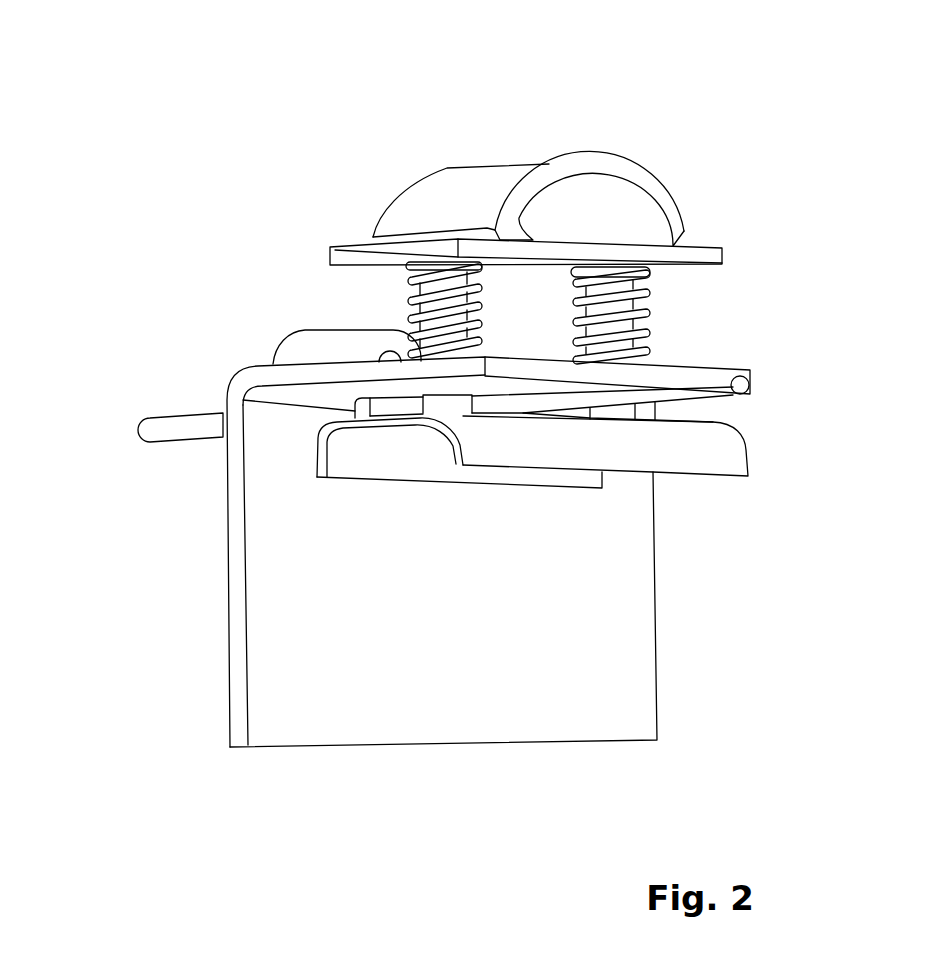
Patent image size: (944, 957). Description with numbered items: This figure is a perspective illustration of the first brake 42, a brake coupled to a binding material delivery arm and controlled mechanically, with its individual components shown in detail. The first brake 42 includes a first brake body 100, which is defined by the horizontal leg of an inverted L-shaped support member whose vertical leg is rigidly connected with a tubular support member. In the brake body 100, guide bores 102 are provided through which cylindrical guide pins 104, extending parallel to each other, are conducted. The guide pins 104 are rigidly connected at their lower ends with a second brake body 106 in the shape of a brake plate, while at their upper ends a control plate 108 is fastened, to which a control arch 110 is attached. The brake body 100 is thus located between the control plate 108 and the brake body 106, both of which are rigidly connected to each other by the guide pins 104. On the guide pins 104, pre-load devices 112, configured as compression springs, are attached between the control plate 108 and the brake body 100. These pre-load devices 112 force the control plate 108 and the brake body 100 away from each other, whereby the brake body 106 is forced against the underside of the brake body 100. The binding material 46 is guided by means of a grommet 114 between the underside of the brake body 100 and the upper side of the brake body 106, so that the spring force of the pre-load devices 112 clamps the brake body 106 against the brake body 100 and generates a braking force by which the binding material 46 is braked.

The first brake 42 is at (537, 98).
The control arch 110 is at (420, 200).
The control plate 108 is at (355, 246).
The guide pins 104 is at (405, 297).
The pre-load devices 112 is at (620, 307).
The grommet 114 is at (303, 350).
The binding material 46 is at (712, 386).
The first brake body 100 is at (308, 377).
The guide bores 102 is at (425, 410).
The second brake body 106 is at (713, 448).